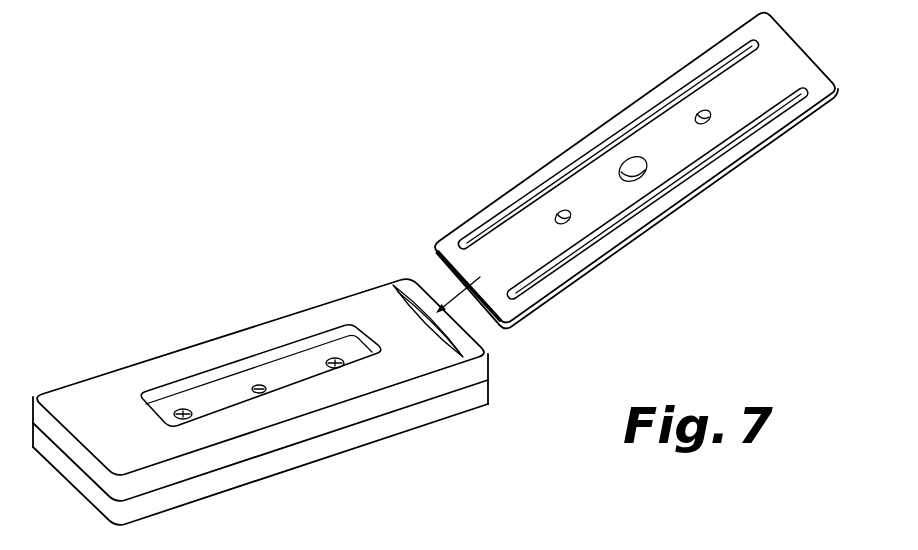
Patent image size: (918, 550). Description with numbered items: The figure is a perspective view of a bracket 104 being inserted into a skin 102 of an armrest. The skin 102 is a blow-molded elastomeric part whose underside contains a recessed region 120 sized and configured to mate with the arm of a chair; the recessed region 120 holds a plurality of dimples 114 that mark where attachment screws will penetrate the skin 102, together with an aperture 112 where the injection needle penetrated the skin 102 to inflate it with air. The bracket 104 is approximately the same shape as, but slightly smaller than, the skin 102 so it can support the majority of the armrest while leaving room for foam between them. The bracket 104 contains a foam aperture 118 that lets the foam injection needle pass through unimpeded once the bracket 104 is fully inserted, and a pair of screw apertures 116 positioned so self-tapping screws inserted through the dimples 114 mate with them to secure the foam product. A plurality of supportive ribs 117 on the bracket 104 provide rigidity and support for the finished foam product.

The skin 102 is at (88, 398).
The bracket 104 is at (445, 246).
The aperture 112 is at (258, 385).
The dimples 114 is at (183, 409).
The screw apertures 116 is at (558, 212).
The supportive ribs 117 is at (720, 58).
The foam aperture 118 is at (627, 163).
The recessed region 120 is at (291, 362).